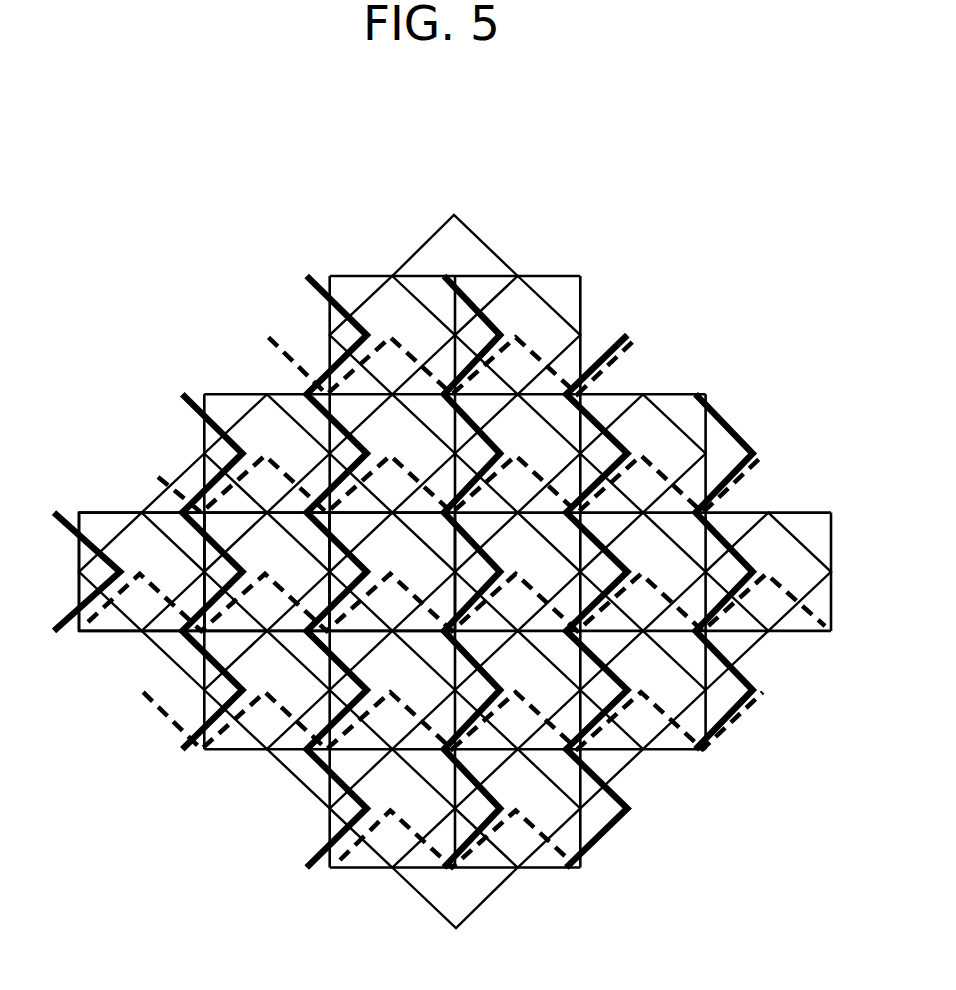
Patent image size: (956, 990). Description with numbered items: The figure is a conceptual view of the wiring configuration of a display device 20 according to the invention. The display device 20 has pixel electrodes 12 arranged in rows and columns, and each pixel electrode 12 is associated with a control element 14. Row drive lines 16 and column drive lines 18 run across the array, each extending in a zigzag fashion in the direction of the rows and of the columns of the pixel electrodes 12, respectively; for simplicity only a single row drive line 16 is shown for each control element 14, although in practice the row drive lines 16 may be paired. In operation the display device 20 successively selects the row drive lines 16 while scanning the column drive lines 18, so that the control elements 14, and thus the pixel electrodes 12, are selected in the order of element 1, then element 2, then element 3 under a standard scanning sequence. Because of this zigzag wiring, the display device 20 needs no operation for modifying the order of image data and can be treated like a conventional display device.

The pixel electrode 12 is at (547, 275).
The control element 14 is at (621, 768).
The row drive line 16 is at (160, 477).
The column drive line 18 is at (302, 274).
The display device 20 is at (688, 296).
The element 1 is at (141, 572).
The element 2 is at (266, 572).
The element 3 is at (392, 572).